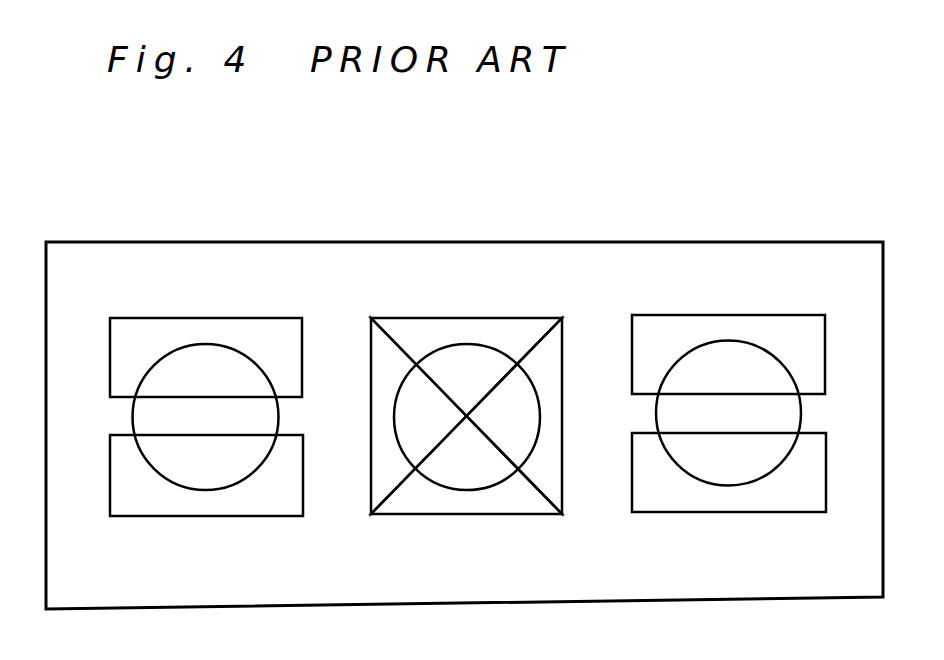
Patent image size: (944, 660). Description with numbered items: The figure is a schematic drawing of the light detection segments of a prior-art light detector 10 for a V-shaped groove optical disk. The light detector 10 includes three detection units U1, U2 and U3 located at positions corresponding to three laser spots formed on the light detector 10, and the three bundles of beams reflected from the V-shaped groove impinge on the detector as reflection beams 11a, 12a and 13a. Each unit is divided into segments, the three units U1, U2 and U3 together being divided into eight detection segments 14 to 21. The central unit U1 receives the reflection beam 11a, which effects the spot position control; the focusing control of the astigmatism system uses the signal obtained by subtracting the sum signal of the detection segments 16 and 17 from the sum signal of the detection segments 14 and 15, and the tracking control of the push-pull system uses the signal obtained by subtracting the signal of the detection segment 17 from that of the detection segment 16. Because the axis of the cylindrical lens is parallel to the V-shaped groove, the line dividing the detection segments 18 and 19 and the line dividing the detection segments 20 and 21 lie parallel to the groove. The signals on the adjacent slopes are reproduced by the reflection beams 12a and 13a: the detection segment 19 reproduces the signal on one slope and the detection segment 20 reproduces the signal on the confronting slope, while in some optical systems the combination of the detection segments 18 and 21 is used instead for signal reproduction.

The light detector 10 is at (651, 238).
The detection unit U1 is at (471, 364).
The detection unit U2 is at (729, 362).
The detection unit U3 is at (213, 365).
The reflection beam 11a is at (497, 483).
The reflection beam 12a is at (767, 477).
The reflection beam 13a is at (240, 482).
The detection segment 14 is at (552, 422).
The detection segment 15 is at (380, 408).
The detection segment 16 is at (490, 327).
The detection segment 17 is at (452, 517).
The detection segment 18 is at (732, 323).
The detection segment 19 is at (712, 500).
The detection segment 20 is at (235, 323).
The detection segment 21 is at (190, 503).